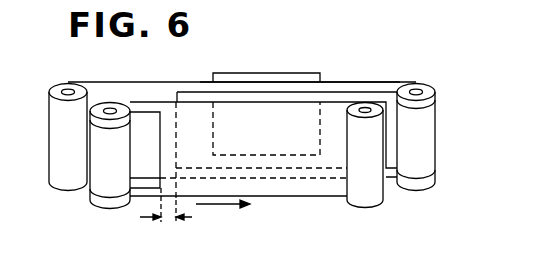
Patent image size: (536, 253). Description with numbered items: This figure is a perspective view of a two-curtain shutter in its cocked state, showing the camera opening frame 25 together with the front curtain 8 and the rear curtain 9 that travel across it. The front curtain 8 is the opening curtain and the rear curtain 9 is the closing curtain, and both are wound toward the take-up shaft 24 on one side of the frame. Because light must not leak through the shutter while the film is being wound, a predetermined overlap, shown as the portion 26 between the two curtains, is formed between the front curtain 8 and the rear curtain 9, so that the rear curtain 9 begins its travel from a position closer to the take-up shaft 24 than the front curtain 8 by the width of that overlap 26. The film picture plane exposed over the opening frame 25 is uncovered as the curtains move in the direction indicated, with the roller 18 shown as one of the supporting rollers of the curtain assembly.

The front curtain 8 is at (275, 197).
The rear curtain 9 is at (344, 82).
The roller 18 is at (370, 201).
The take-up shaft 24 is at (427, 138).
The camera opening frame 25 is at (262, 73).
The overlap portion 26 is at (168, 222).